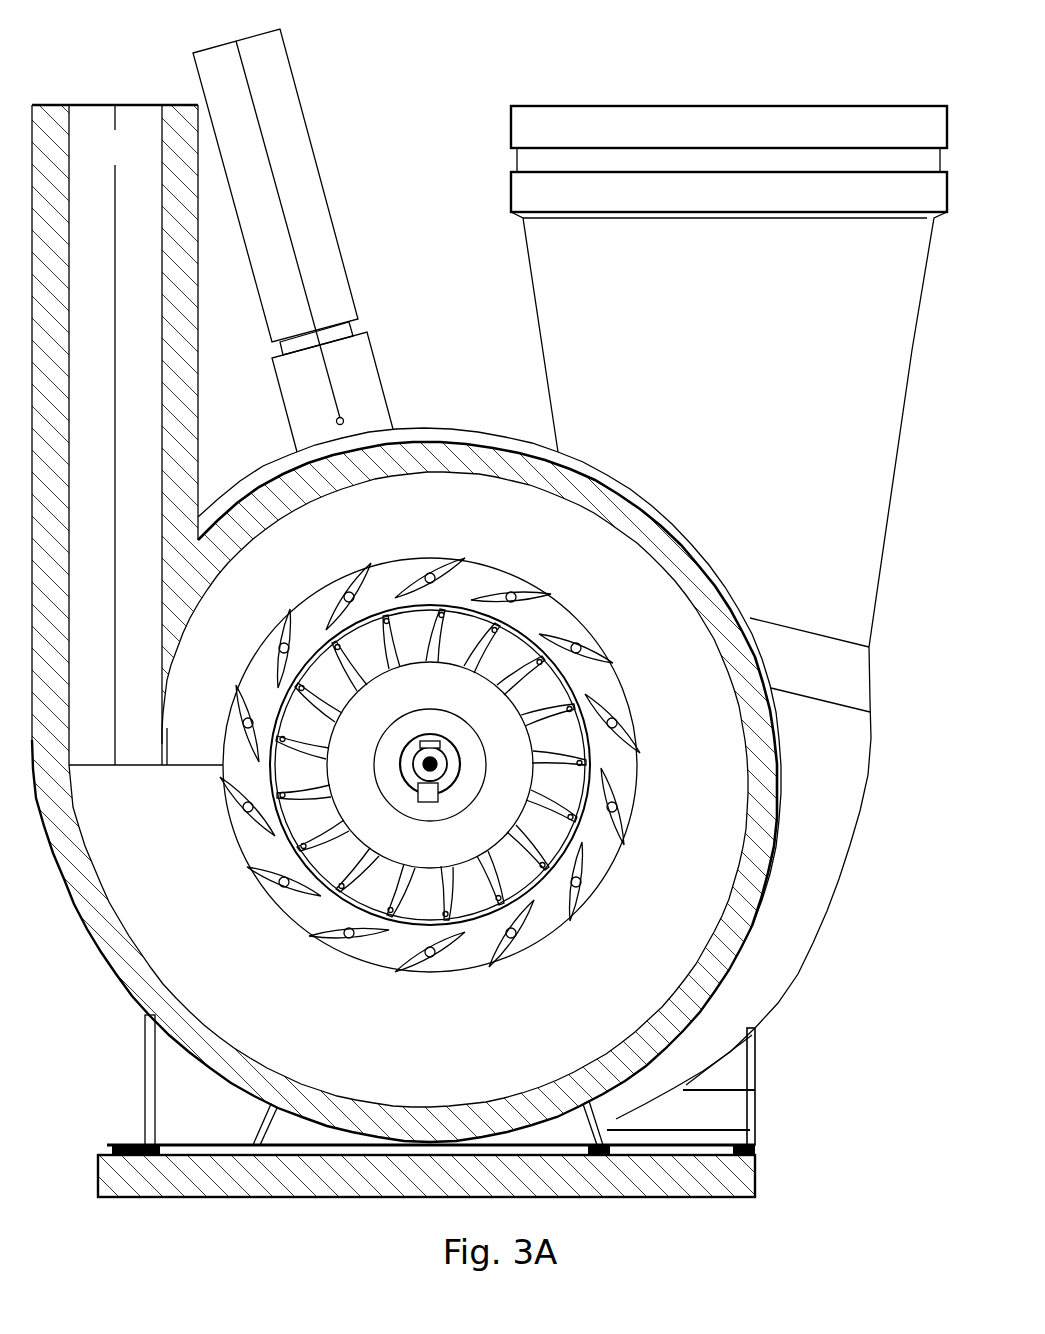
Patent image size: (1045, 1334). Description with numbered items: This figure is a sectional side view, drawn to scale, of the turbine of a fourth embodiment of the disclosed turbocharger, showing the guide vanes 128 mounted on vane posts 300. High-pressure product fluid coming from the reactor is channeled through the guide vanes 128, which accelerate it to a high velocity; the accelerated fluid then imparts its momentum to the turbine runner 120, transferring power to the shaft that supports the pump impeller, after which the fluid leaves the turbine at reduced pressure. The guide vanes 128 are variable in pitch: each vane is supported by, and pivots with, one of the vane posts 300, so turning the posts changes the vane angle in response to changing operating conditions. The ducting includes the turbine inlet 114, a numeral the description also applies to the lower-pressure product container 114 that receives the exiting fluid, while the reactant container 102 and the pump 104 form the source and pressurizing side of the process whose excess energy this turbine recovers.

The turbine inlet 114 is at (96, 163).
The reactant container 102 is at (698, 272).
The pump 104 is at (478, 426).
The turbine runner 120 is at (410, 699).
The guide vanes 128 is at (464, 557).
The vane posts 300 is at (513, 592).